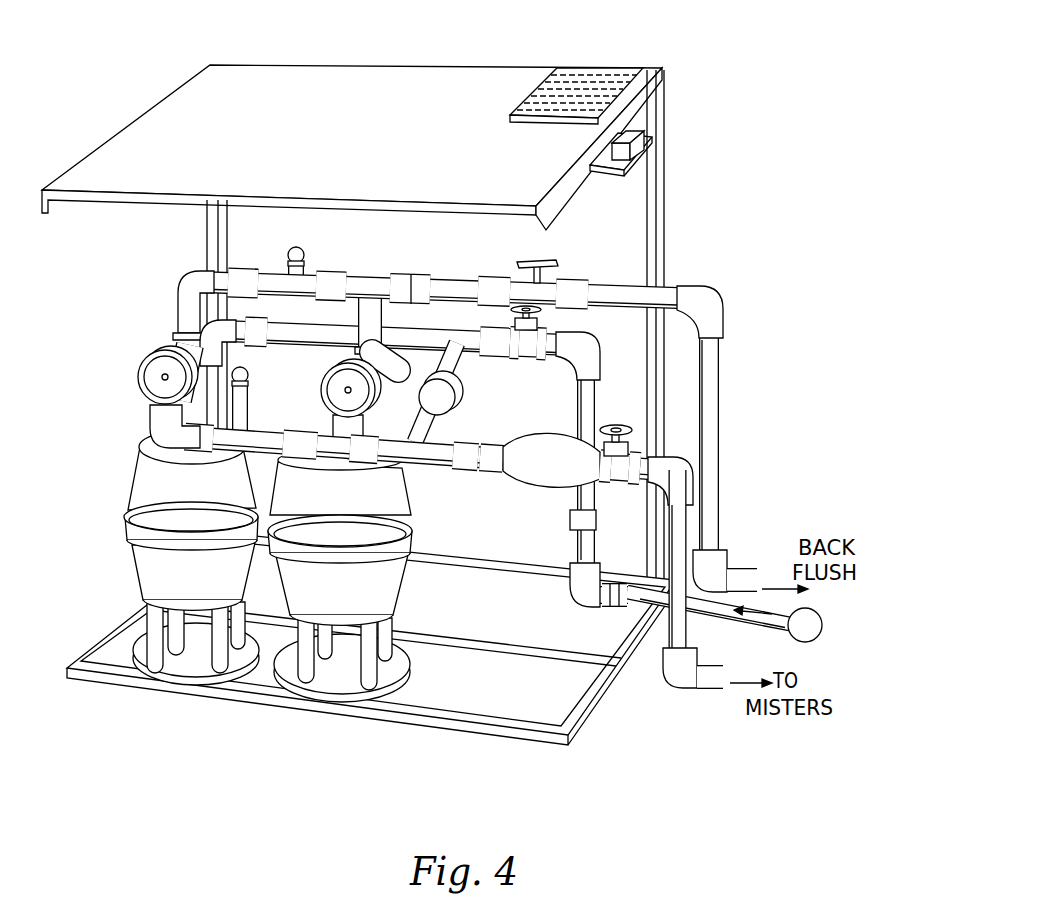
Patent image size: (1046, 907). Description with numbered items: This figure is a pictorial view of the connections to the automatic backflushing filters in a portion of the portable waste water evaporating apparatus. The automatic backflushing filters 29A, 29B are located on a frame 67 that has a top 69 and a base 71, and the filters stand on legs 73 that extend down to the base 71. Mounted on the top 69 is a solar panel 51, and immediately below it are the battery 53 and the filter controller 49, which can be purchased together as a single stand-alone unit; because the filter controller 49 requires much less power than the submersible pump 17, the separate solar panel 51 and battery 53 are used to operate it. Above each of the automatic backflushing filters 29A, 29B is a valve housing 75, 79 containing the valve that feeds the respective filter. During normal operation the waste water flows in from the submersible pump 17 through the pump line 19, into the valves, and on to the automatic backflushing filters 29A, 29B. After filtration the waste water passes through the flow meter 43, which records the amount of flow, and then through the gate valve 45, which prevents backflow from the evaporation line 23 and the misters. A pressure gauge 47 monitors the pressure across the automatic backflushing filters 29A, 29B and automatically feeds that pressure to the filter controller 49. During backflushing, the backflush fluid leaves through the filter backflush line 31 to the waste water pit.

The submersible pump 17 is at (825, 628).
The pump line 19 is at (706, 618).
The evaporation line 23 is at (712, 693).
The automatic backflushing filter 29A is at (207, 506).
The automatic backflushing filter 29B is at (355, 509).
The filter backflush line 31 is at (722, 420).
The flow meter 43 is at (550, 478).
The gate valve 45 is at (617, 425).
The pressure gauge 47 is at (455, 405).
The filter controller 49 is at (633, 163).
The solar panel 51 is at (608, 72).
The battery 53 is at (643, 134).
The frame 67 is at (665, 222).
The top 69 is at (360, 145).
The base 71 is at (482, 743).
The legs 73 is at (210, 660).
The valve housing 75 is at (155, 368).
The valve housing 79 is at (333, 385).